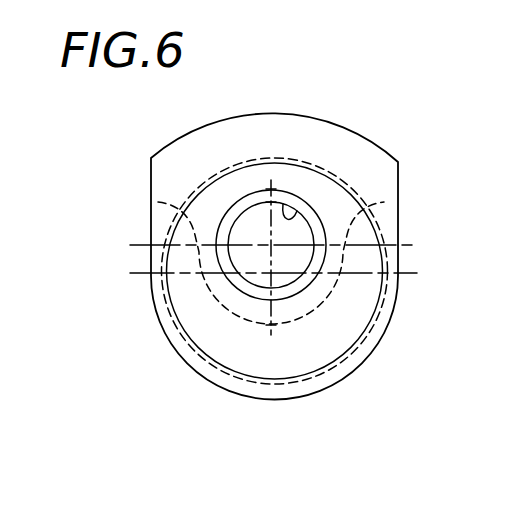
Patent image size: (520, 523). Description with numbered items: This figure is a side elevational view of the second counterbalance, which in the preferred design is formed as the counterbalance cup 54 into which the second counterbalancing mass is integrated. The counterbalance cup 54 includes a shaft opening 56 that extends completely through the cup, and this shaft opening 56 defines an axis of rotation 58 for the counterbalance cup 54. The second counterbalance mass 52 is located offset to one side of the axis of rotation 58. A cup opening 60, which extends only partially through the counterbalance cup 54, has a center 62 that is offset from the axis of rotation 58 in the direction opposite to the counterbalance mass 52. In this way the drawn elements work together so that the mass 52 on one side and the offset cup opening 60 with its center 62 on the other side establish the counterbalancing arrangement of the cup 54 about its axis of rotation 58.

The second counterbalance mass 52 is at (290, 143).
The counterbalance cup 54 is at (147, 131).
The shaft opening 56 is at (303, 199).
The axis of rotation 58 is at (272, 245).
The cup opening 60 is at (207, 363).
The center 62 is at (274, 274).